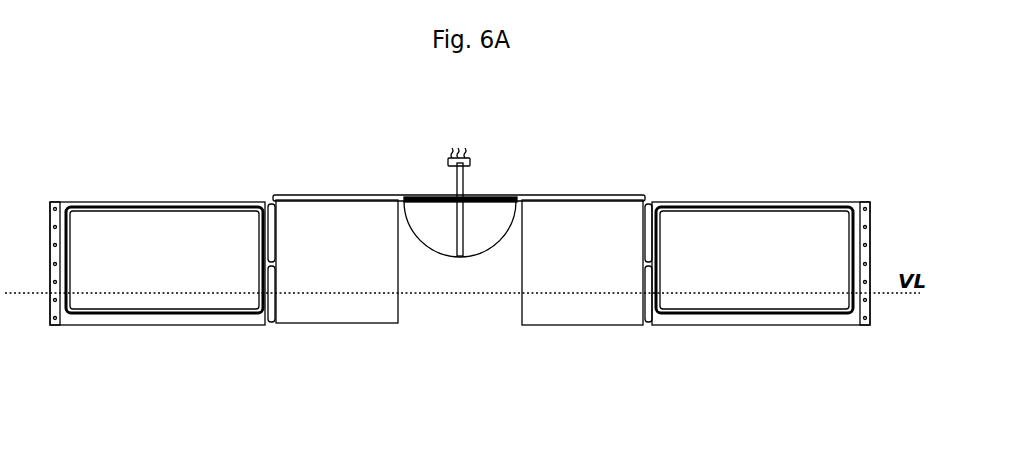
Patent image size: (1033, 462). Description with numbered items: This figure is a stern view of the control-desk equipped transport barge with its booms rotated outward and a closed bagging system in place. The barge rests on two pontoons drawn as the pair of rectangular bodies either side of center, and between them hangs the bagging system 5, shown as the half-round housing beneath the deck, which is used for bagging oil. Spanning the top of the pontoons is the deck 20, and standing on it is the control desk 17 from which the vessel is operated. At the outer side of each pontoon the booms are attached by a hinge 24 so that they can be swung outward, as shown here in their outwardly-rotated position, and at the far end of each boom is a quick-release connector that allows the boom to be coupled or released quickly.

The bagging system 5 is at (445, 228).
The control desk 17 is at (448, 150).
The deck 20 is at (623, 192).
The hinge 24 is at (277, 320).